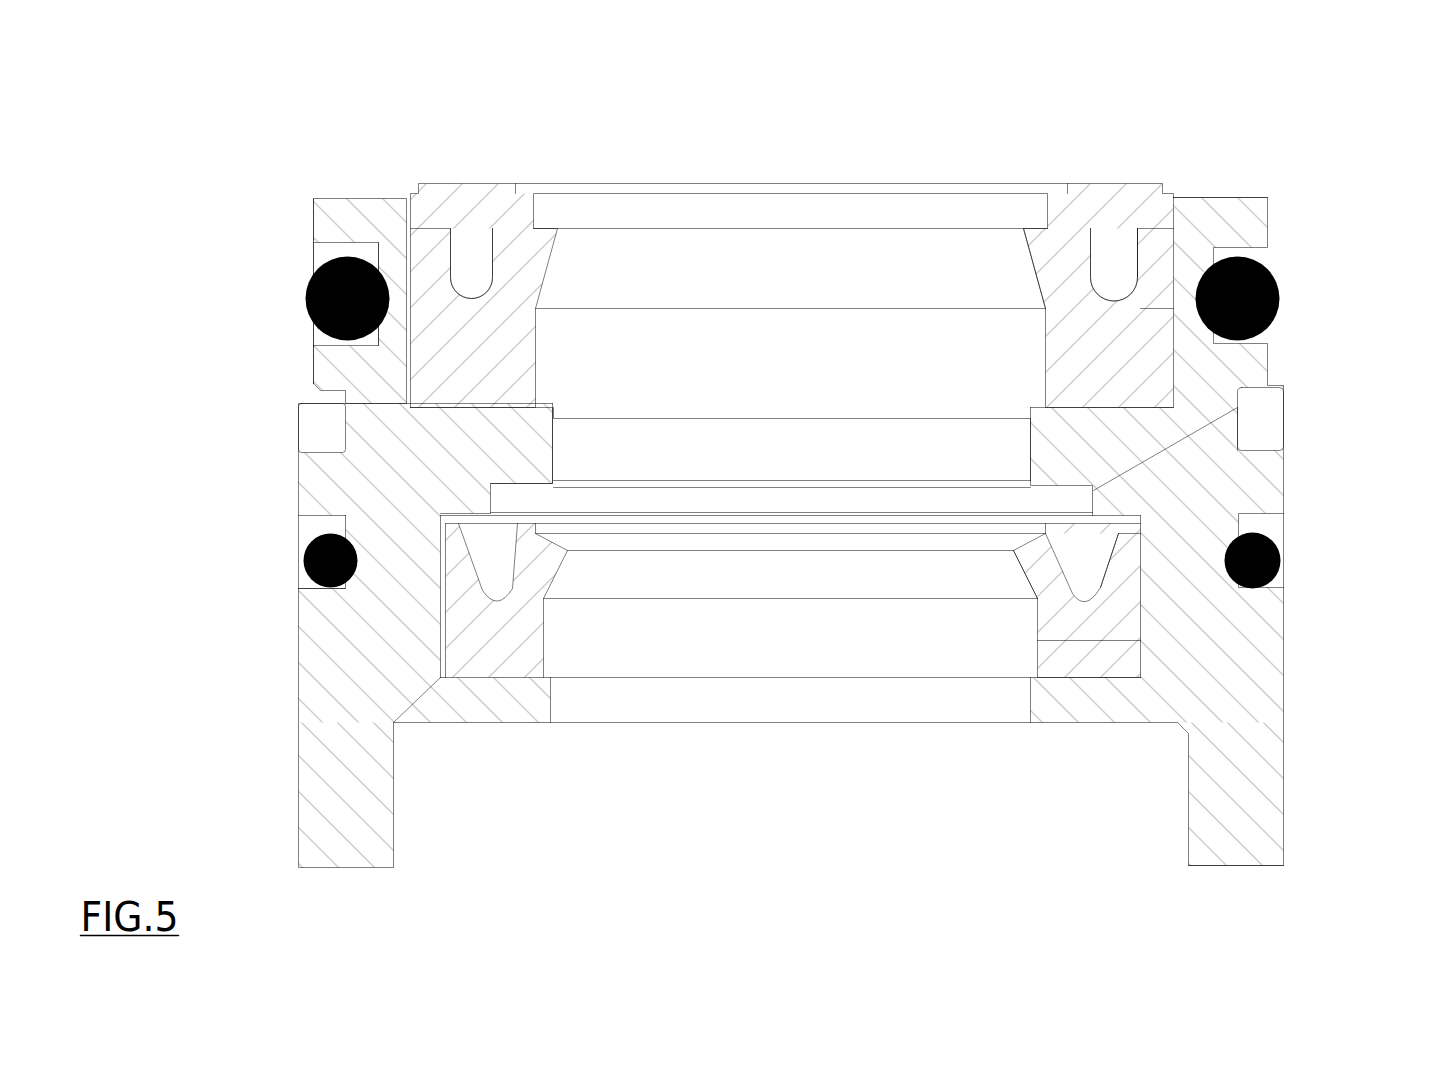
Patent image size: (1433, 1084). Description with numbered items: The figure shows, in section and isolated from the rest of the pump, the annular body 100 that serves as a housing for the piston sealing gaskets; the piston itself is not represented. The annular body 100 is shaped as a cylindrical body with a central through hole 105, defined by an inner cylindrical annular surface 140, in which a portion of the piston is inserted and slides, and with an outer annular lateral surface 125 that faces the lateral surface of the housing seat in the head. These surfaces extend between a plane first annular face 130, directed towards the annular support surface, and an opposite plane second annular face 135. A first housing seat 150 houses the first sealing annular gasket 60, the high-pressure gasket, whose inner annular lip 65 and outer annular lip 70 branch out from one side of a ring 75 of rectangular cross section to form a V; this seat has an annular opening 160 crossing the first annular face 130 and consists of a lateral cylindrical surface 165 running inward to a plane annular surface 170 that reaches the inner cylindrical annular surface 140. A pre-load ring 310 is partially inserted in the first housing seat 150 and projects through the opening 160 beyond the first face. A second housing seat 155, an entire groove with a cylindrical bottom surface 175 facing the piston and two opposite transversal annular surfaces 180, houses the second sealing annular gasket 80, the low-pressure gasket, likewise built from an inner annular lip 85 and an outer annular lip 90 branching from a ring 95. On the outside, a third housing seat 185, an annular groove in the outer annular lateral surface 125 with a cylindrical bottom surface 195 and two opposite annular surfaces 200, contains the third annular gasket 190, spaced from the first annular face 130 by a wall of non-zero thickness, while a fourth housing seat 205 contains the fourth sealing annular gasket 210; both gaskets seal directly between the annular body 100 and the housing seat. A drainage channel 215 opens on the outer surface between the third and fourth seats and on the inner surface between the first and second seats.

The annular body 100 is at (306, 205).
The central through hole 105 is at (772, 456).
The outer annular lateral surface 125 is at (1268, 213).
The first annular face 130 is at (355, 197).
The second annular face 135 is at (1240, 866).
The inner cylindrical annular surface 140 is at (1028, 445).
The first housing seat 150 is at (400, 409).
The second housing seat 155 is at (432, 679).
The opening 160 is at (1123, 248).
The lateral cylindrical surface 165 is at (1145, 378).
The plane annular surface 170 is at (1237, 422).
The cylindrical bottom surface 175 is at (1115, 627).
The annular surfaces 180 is at (1145, 528).
The third housing seat 185 is at (345, 256).
The third annular gasket 190 is at (306, 300).
The cylindrical bottom surface 195 is at (468, 296).
The annular surfaces 200 is at (370, 241).
The fourth housing seat 205 is at (350, 605).
The fourth sealing annular gasket 210 is at (303, 560).
The drainage channel 215 is at (458, 525).
The pre-load ring 310 is at (487, 200).
The first sealing annular gasket 60 is at (1070, 258).
The inner annular lip 65 is at (1042, 250).
The outer annular lip 70 is at (1208, 196).
The ring 75 is at (1150, 372).
The second sealing annular gasket 80 is at (1080, 682).
The inner annular lip 85 is at (985, 590).
The outer annular lip 90 is at (1122, 565).
The ring 95 is at (1105, 648).